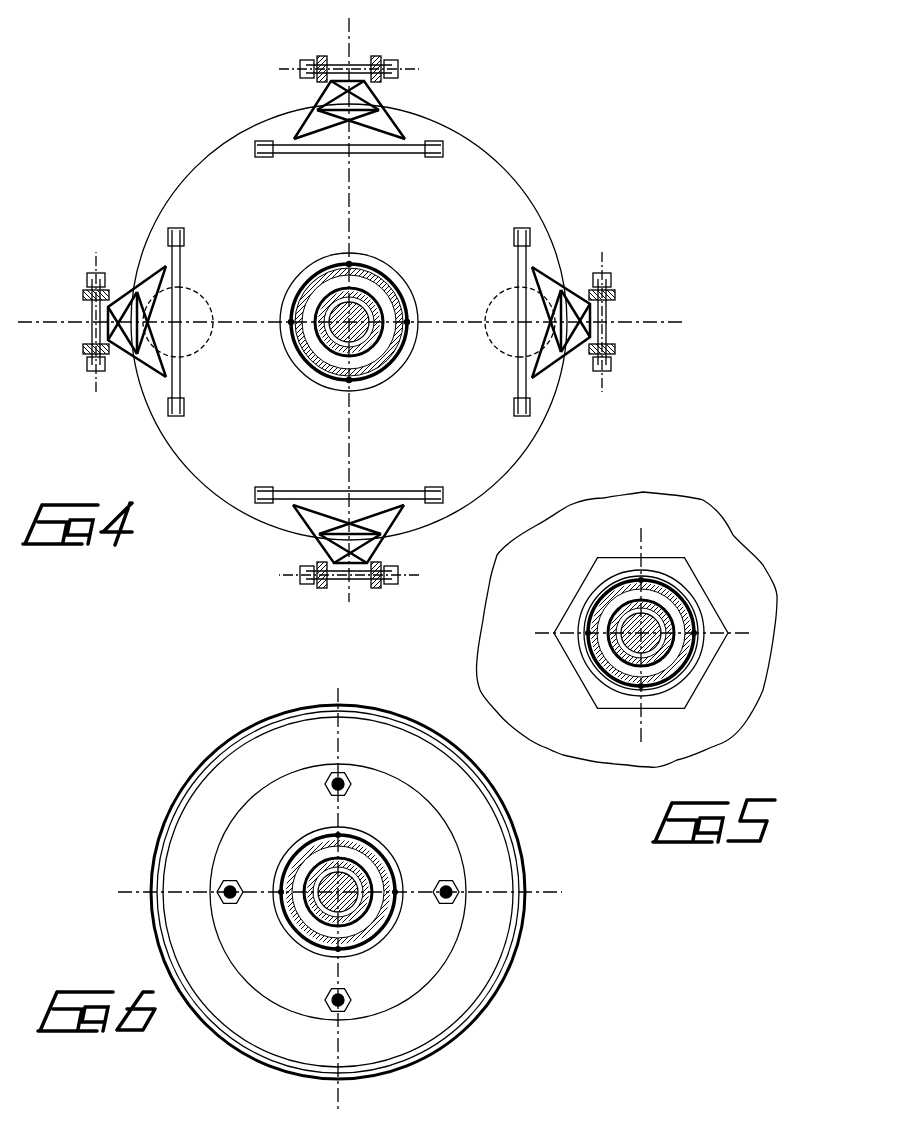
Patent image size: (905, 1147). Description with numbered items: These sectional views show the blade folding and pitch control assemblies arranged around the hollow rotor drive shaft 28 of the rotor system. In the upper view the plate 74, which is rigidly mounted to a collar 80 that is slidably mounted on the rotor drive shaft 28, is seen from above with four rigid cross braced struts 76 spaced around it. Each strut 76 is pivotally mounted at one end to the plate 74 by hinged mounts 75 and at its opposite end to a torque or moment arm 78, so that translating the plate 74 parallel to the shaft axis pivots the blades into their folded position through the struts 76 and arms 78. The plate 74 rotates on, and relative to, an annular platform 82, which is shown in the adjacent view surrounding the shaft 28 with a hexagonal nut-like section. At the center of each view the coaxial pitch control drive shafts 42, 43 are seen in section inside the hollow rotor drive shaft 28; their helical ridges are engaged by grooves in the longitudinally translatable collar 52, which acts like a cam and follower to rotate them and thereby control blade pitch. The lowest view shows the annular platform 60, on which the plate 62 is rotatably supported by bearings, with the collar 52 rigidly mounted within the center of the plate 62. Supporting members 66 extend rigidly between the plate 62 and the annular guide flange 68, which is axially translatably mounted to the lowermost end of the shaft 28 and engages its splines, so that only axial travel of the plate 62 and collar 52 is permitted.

In FIG. 4, the rotor drive shaft 28 is at (375, 265).
In FIG. 5, the rotor drive shaft 28 is at (690, 605).
In FIG. 6, the rotor drive shaft 28 is at (357, 828).
In FIG. 4, the pitch control drive shaft 42 is at (390, 342).
In FIG. 5, the pitch control drive shaft 42 is at (670, 652).
In FIG. 6, the pitch control drive shaft 42 is at (363, 863).
In FIG. 4, the pitch control drive shaft 43 is at (385, 365).
In FIG. 5, the pitch control drive shaft 43 is at (667, 643).
In FIG. 6, the collar 52 is at (373, 837).
In FIG. 6, the annular platform 60 is at (527, 867).
In FIG. 6, the plate 62 is at (497, 913).
In FIG. 6, the supporting members 66 is at (455, 902).
In FIG. 6, the annular guide flange 68 is at (417, 950).
In FIG. 4, the plate 74 is at (473, 175).
In FIG. 4, the hinged mounts 75 is at (522, 226).
In FIG. 4, the struts 76 is at (388, 110).
In FIG. 4, the torque arms 78 is at (377, 58).
In FIG. 4, the collar 80 is at (350, 262).
In FIG. 5, the annular platform 82 is at (693, 530).